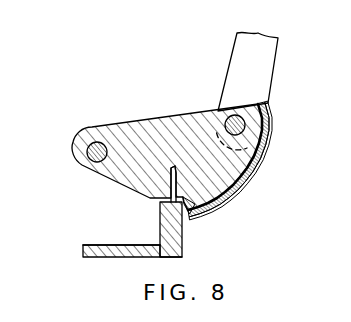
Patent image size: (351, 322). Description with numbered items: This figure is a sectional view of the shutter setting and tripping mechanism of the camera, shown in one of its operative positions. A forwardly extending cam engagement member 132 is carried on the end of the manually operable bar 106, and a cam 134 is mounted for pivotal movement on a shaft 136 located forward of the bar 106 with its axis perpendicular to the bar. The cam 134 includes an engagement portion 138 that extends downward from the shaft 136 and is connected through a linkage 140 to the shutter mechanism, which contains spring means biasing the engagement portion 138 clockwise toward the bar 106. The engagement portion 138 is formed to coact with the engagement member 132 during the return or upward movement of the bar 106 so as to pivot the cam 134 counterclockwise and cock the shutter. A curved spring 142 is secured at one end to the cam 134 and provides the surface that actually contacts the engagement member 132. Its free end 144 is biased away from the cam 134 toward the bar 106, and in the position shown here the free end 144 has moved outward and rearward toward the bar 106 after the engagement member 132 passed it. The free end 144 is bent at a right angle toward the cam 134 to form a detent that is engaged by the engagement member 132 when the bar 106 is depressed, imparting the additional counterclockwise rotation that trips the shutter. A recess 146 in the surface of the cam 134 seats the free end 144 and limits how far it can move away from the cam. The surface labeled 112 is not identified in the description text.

The bar 106 is at (119, 264).
The upper surface of base plate 112 is at (108, 245).
The cam engagement member 132 is at (183, 228).
The cam 134 is at (143, 115).
The shaft 136 is at (92, 152).
The engagement portion 138 is at (263, 156).
The linkage 140 is at (270, 65).
The curved spring 142 is at (247, 182).
The free end of spring 144 is at (192, 212).
The recess 146 is at (169, 180).